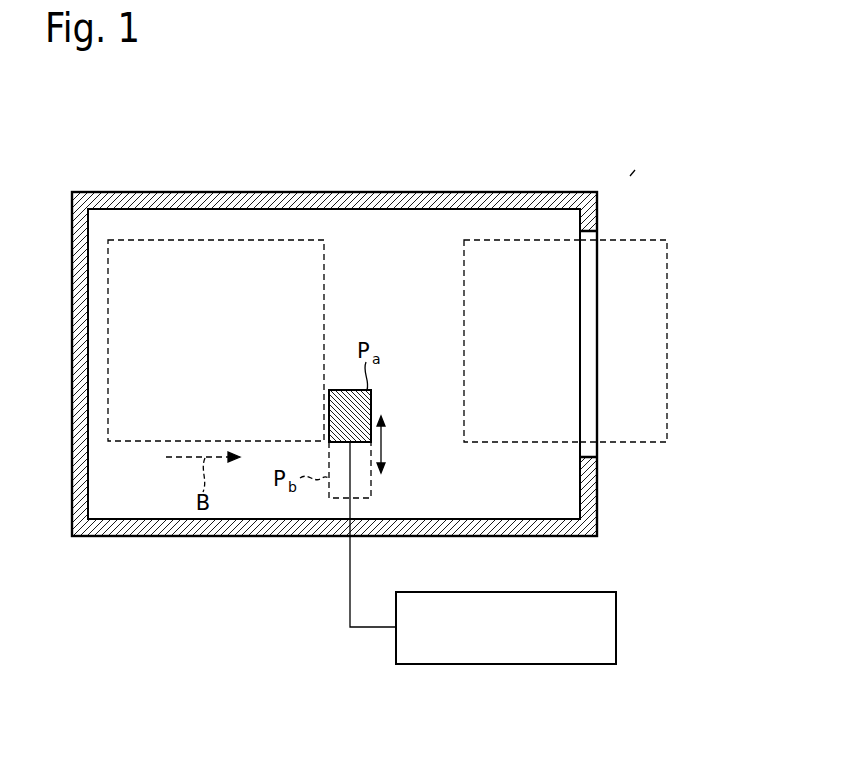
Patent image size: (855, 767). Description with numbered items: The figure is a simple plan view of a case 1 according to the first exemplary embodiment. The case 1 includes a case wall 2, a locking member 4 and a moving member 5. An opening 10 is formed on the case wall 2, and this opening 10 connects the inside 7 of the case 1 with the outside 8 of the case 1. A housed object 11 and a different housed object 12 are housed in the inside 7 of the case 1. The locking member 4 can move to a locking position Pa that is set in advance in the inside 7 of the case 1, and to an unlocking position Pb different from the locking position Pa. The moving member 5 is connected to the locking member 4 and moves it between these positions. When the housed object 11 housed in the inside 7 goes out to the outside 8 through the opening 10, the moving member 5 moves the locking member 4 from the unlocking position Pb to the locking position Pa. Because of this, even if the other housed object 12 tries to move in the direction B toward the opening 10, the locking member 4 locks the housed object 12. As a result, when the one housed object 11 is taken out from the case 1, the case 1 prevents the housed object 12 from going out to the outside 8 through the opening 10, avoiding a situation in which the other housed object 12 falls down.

The case 1 is at (630, 175).
The case wall 2 is at (368, 192).
The locking member 4 is at (338, 390).
The moving member 5 is at (536, 665).
The inside 7 is at (122, 225).
The outside 8 is at (716, 287).
The opening 10 is at (597, 379).
The housed object 11 is at (508, 240).
The housed object 12 is at (216, 240).